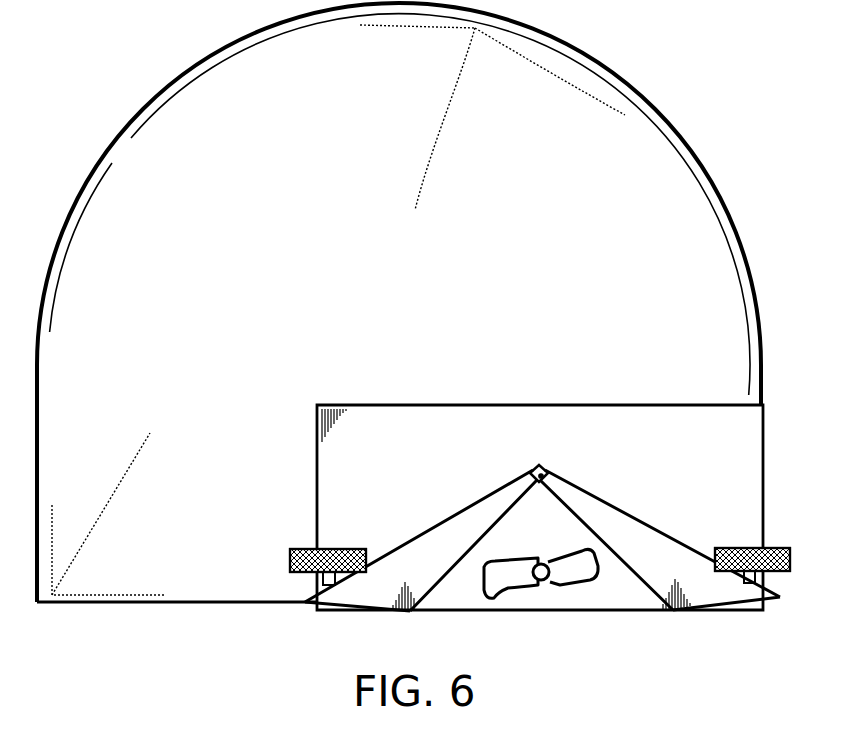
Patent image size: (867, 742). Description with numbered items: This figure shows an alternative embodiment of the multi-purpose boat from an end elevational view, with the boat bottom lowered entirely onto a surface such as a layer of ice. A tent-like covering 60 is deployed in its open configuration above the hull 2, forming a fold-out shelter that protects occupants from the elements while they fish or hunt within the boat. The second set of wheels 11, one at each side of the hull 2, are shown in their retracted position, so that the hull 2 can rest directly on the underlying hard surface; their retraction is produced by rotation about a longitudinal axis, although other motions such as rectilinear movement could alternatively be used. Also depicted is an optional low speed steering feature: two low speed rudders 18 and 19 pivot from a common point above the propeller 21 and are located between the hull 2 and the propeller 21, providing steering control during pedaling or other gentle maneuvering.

The tent-like covering 60 is at (360, 286).
The hull 2 is at (646, 458).
The low speed rudder 18 is at (437, 574).
The low speed rudder 19 is at (656, 555).
The propeller 21 is at (573, 580).
The wheels 11 is at (290, 570).